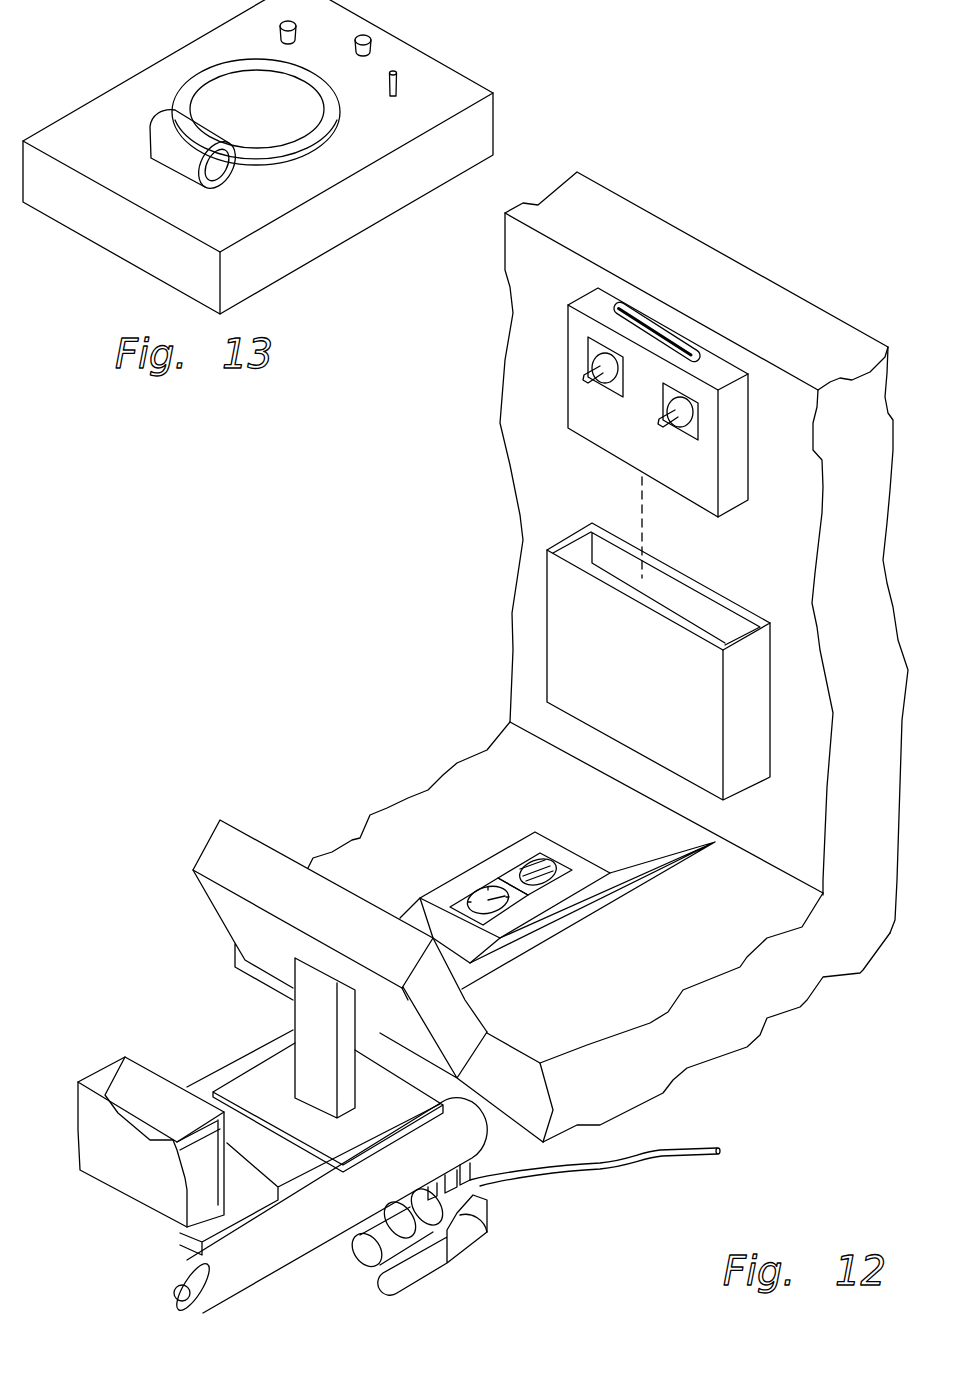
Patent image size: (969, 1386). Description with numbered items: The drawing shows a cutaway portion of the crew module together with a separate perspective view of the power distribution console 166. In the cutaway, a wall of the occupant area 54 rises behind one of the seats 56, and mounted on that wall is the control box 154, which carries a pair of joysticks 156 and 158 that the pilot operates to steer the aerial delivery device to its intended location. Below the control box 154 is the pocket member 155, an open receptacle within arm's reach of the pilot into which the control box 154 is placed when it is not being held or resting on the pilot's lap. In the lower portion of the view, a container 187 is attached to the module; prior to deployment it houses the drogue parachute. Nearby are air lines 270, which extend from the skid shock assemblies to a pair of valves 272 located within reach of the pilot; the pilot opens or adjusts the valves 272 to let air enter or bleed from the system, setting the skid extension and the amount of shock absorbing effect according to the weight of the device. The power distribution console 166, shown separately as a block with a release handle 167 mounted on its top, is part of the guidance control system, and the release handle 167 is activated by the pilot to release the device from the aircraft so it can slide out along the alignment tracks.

In FIG. 12, the occupant area 54 is at (784, 574).
In FIG. 12, the seat 56 is at (530, 801).
In FIG. 12, the control box 154 is at (590, 427).
In FIG. 12, the pocket member 155 is at (598, 360).
In FIG. 12, the joystick 156 is at (572, 638).
In FIG. 12, the joystick 158 is at (686, 410).
In FIG. 13, the power distribution console 166 is at (455, 88).
In FIG. 12, the power distribution console 166 is at (225, 855).
In FIG. 13, the release handle 167 is at (178, 155).
In FIG. 12, the container 187 is at (162, 1083).
In FIG. 12, the air line 270 is at (618, 1170).
In FIG. 12, the valve 272 is at (460, 1223).